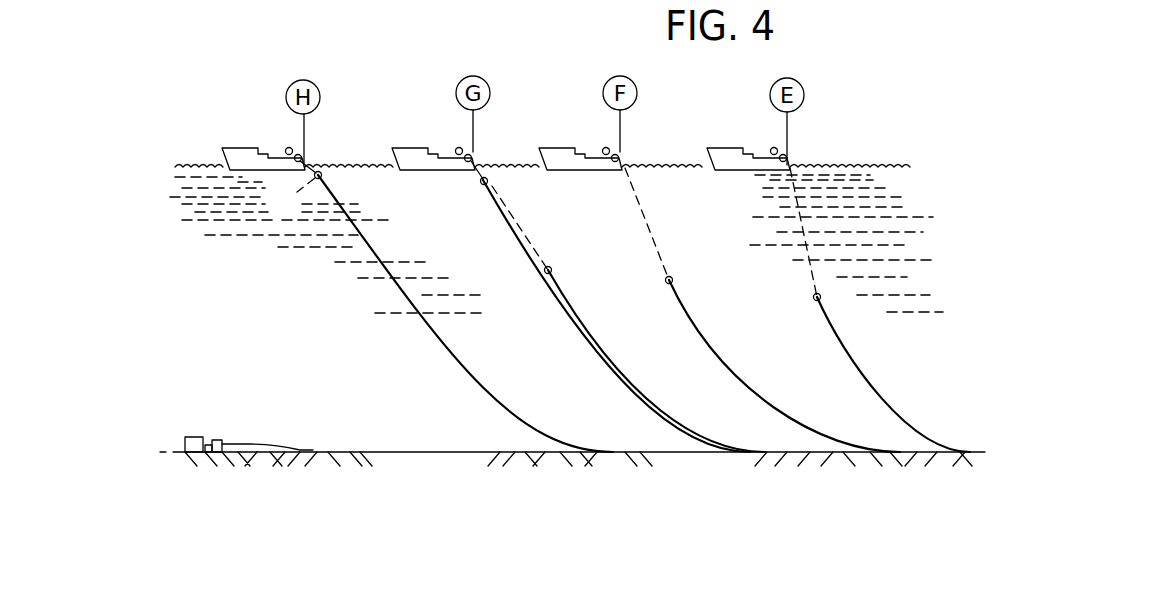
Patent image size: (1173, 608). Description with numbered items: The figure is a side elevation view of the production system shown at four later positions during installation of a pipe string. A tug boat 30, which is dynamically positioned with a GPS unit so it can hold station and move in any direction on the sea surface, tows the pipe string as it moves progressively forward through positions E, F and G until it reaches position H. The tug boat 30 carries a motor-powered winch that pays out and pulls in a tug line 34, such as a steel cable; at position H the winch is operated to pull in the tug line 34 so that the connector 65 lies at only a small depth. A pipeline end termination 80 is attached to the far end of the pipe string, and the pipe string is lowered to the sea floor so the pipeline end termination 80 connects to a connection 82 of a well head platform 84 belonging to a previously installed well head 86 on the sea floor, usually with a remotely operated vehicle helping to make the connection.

The tug boat 30 is at (703, 149).
The tug line 34 is at (805, 238).
The connector 65 is at (322, 176).
The pipeline end termination 80 is at (223, 441).
The connection 82 is at (209, 444).
The well head platform 84 is at (192, 437).
The well head 86 is at (197, 459).